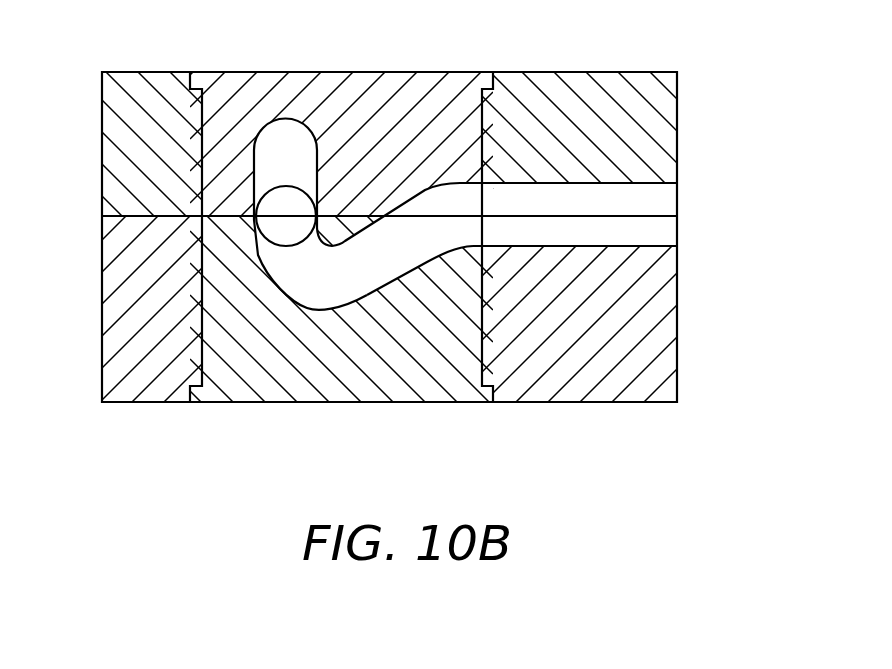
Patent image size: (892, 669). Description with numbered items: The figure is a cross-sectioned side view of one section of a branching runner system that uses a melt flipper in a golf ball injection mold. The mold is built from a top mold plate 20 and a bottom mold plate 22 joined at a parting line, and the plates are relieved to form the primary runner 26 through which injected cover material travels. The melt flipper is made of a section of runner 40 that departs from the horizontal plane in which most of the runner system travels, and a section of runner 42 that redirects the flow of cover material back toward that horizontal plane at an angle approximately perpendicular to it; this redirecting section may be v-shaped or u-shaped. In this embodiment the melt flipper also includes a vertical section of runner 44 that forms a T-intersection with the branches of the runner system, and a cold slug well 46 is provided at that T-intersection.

The top mold plate 20 is at (660, 112).
The bottom mold plate 22 is at (637, 390).
The primary runner 26 is at (657, 195).
The section of runner 40 is at (402, 248).
The section of runner 42 is at (316, 285).
The vertical section of runner 44 is at (280, 261).
The cold slug well 46 is at (290, 132).